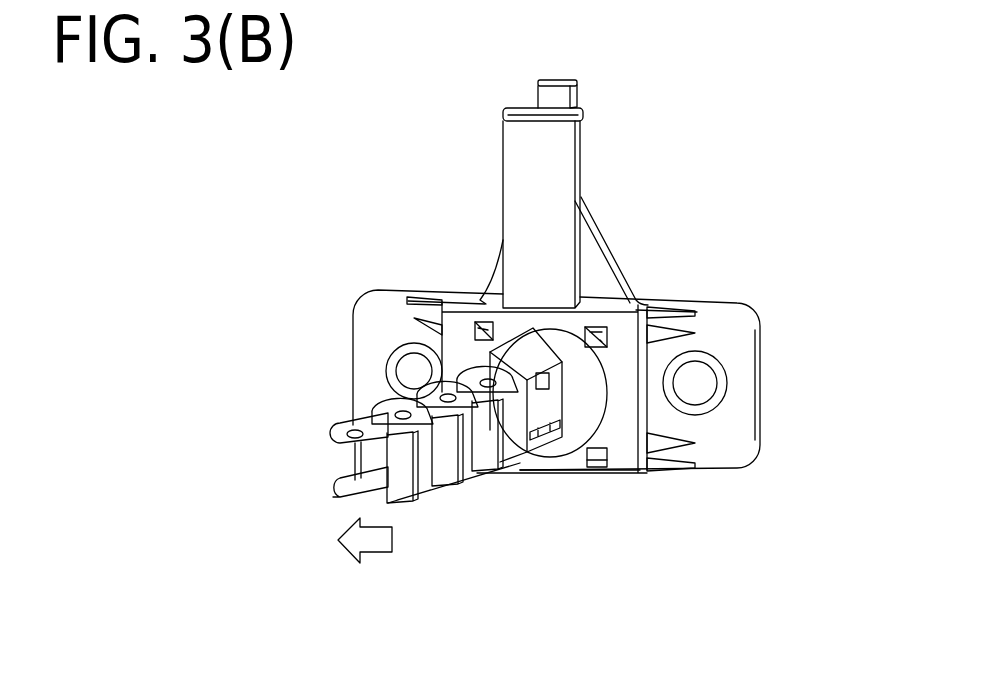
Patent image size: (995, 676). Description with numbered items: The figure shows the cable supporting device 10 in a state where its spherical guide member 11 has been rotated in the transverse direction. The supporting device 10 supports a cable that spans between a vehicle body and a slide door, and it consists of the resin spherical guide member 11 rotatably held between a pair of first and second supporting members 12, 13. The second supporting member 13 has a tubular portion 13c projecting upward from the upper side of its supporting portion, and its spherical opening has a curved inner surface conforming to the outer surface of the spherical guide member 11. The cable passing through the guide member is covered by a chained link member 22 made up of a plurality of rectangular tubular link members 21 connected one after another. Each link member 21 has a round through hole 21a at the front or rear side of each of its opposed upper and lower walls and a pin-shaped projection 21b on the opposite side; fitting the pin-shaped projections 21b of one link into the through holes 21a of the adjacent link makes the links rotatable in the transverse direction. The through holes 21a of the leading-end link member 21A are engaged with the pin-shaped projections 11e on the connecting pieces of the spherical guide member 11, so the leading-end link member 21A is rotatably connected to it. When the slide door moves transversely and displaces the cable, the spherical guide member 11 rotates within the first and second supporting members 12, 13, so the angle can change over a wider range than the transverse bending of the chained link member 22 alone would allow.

The cable supporting device 10 is at (363, 263).
The spherical guide member 11 is at (568, 472).
The pin-shaped projections 11e is at (480, 330).
The first supporting member 12 is at (623, 472).
The second supporting member 13 is at (763, 395).
The tubular portion 13c is at (563, 192).
The link member 21 is at (408, 498).
The through hole 21a is at (418, 498).
The leading-end link member 21A is at (497, 470).
The pin-shaped projection 21b is at (422, 413).
The chained link member 22 is at (327, 500).